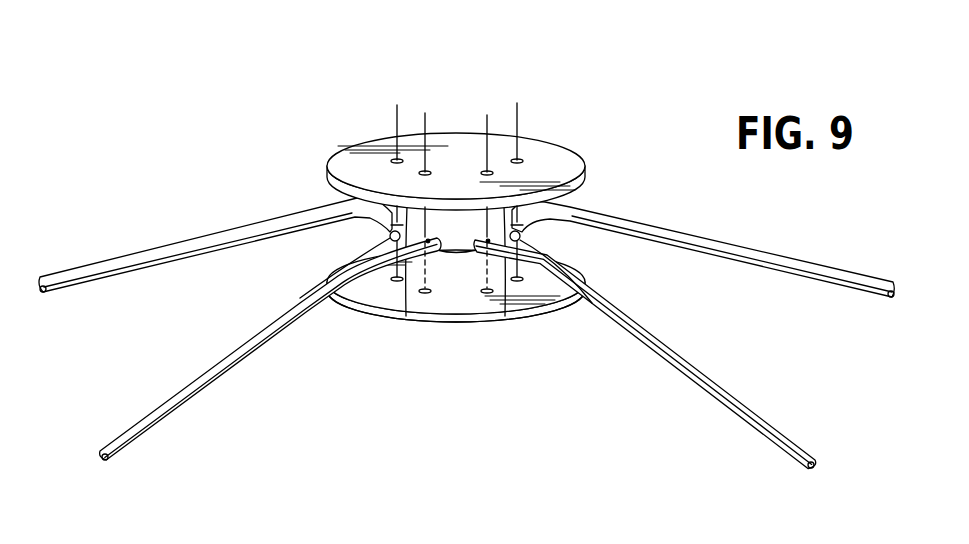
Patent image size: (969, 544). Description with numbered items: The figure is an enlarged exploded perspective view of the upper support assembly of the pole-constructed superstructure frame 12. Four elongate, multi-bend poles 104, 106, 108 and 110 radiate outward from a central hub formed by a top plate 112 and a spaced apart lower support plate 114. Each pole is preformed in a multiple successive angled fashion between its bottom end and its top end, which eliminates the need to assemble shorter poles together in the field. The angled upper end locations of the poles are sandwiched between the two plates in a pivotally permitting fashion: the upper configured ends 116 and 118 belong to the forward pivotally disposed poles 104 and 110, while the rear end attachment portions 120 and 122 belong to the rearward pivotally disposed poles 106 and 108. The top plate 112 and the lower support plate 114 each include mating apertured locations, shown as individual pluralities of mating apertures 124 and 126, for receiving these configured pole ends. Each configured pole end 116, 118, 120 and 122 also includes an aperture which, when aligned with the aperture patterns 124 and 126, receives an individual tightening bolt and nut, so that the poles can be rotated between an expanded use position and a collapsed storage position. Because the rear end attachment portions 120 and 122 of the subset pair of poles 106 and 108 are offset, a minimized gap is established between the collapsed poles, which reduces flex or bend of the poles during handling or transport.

The frame 12 is at (348, 104).
The pole 104 is at (210, 388).
The pole 106 is at (168, 252).
The pole 108 is at (753, 247).
The pole 110 is at (678, 375).
The top plate 112 is at (466, 138).
The lower support plate 114 is at (409, 308).
The upper configured end 116 is at (400, 311).
The upper configured end 118 is at (503, 295).
The rear end attachment portion 120 is at (360, 240).
The rear end attachment portion 122 is at (572, 210).
The mating apertures 124 is at (393, 161).
The mating apertures 126 is at (432, 293).